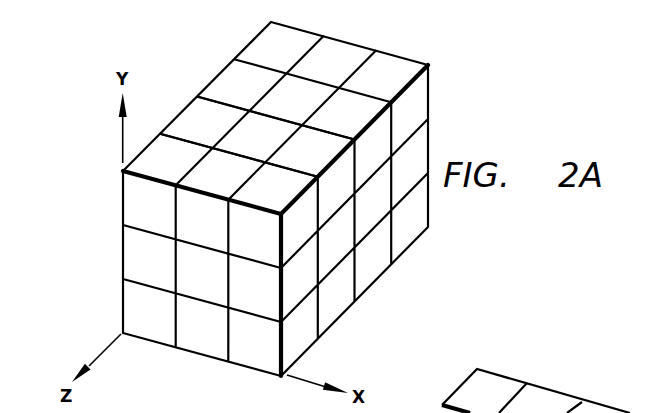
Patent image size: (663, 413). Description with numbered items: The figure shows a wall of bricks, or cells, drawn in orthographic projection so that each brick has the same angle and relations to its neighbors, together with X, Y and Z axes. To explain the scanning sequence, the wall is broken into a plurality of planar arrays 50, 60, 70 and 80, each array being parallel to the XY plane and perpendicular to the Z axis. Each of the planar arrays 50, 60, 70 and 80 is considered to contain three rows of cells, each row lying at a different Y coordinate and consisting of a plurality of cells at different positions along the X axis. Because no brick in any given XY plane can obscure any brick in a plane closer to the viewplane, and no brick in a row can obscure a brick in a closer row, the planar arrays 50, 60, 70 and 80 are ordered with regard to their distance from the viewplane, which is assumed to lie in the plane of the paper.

The planar array 50 is at (250, 47).
The planar array 60 is at (220, 82).
The planar array 70 is at (187, 113).
The planar array 80 is at (152, 147).